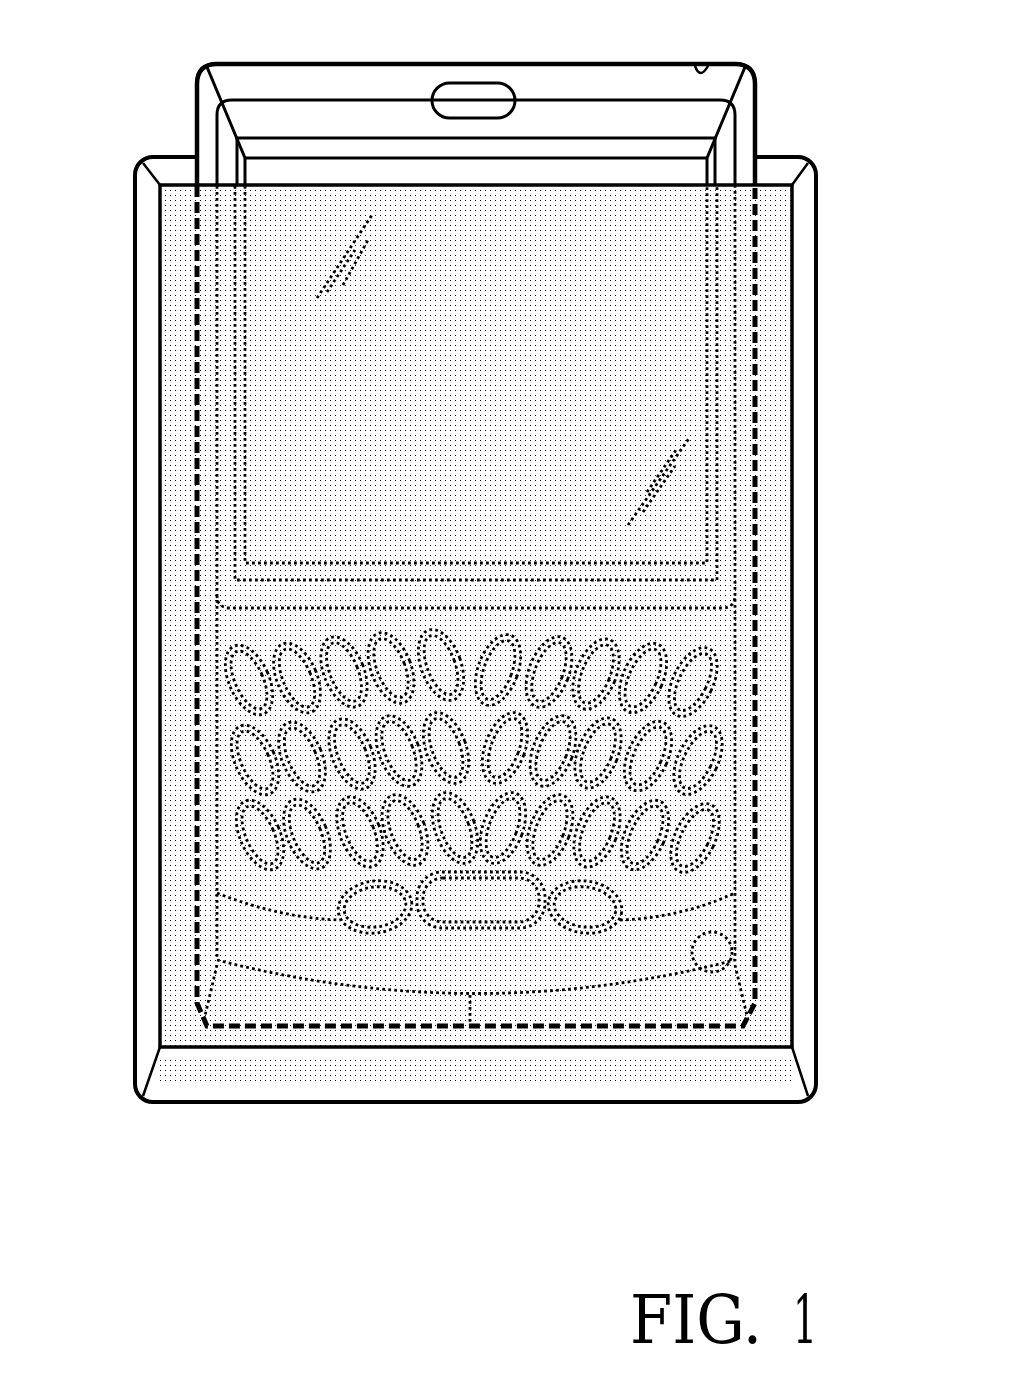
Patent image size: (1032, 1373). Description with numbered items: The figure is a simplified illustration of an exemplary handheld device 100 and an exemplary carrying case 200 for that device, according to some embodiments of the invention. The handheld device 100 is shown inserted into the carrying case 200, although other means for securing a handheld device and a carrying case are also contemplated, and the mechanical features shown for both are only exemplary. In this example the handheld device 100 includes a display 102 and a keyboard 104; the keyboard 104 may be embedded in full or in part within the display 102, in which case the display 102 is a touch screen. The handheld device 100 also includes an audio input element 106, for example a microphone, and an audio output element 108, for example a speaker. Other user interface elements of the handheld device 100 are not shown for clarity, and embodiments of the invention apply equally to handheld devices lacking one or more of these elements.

The handheld device 100 is at (320, 60).
The display 102 is at (274, 359).
The keyboard 104 is at (233, 633).
The audio input element 106 is at (745, 916).
The audio output element 108 is at (445, 83).
The carrying case 200 is at (133, 278).